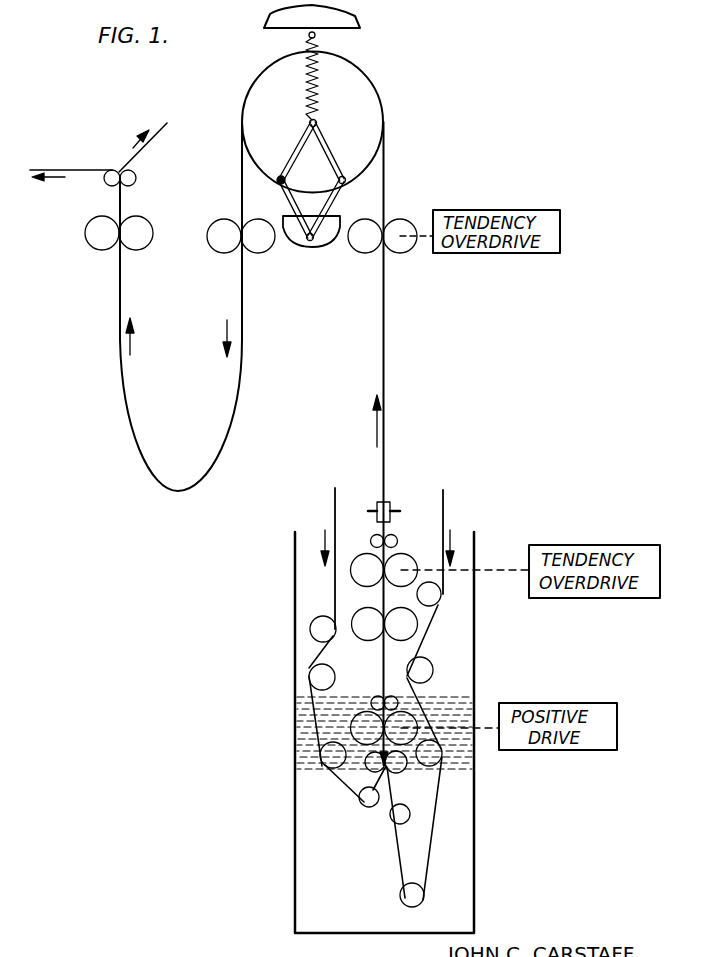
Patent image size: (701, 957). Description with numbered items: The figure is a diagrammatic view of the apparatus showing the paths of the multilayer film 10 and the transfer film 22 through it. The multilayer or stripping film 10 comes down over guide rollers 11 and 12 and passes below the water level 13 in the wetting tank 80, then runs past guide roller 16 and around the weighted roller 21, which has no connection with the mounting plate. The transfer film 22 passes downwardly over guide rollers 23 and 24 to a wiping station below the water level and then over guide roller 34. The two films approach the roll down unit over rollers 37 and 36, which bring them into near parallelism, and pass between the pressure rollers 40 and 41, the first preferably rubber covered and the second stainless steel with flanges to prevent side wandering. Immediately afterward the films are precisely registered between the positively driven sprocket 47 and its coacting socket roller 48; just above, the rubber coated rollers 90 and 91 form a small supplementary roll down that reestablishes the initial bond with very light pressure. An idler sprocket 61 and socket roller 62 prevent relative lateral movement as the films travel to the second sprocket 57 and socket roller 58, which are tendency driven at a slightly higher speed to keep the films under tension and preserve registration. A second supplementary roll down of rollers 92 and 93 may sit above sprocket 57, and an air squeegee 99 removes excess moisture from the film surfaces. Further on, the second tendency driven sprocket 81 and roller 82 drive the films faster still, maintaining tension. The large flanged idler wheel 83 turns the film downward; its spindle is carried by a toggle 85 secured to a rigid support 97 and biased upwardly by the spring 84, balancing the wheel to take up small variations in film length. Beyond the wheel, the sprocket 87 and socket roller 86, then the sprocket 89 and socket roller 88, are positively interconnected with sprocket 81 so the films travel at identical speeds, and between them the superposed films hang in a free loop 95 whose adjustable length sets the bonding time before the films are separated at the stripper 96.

The spring 84 is at (318, 88).
The idler wheel 83 is at (363, 104).
The toggle 85 is at (340, 166).
The rigid support 97 is at (318, 243).
The sprocket 87 is at (221, 243).
The socket roller 86 is at (253, 245).
The roller 82 is at (363, 244).
The tendency driven sprocket 81 is at (401, 245).
The stripper 96 is at (137, 178).
The socket roller 88 is at (97, 244).
The sprocket 89 is at (133, 245).
The free loop 95 is at (204, 484).
The wetting tank 80 is at (474, 641).
The water level 13 is at (474, 683).
The transfer film 22 is at (335, 488).
The multilayer film 10 is at (443, 490).
The air squeegee 99 is at (386, 502).
The rubber coated roller 93 is at (373, 538).
The rubber coated roller 92 is at (396, 537).
The socket roller 58 is at (367, 581).
The second sprocket 57 is at (406, 562).
The guide roller 11 is at (439, 599).
The guide roller 23 is at (323, 621).
The socket roller 62 is at (367, 636).
The idler sprocket 61 is at (403, 636).
The guide roller 24 is at (323, 673).
The guide roller 12 is at (428, 667).
The rubber coated roller 91 is at (375, 698).
The rubber coated roller 90 is at (392, 696).
The socket roller 48 is at (351, 725).
The sprocket 47 is at (412, 725).
The guide roller 34 is at (327, 765).
The pressure roller 40 is at (369, 767).
The pressure roller 41 is at (394, 770).
The guide roller 16 is at (427, 762).
The roller 36 is at (367, 806).
The roller 37 is at (401, 821).
The roller 21 is at (402, 896).